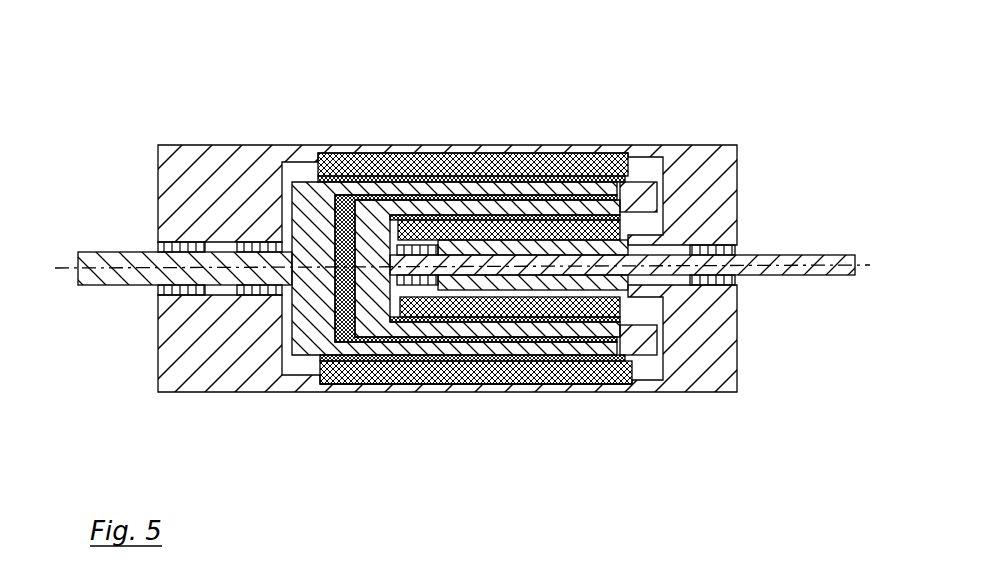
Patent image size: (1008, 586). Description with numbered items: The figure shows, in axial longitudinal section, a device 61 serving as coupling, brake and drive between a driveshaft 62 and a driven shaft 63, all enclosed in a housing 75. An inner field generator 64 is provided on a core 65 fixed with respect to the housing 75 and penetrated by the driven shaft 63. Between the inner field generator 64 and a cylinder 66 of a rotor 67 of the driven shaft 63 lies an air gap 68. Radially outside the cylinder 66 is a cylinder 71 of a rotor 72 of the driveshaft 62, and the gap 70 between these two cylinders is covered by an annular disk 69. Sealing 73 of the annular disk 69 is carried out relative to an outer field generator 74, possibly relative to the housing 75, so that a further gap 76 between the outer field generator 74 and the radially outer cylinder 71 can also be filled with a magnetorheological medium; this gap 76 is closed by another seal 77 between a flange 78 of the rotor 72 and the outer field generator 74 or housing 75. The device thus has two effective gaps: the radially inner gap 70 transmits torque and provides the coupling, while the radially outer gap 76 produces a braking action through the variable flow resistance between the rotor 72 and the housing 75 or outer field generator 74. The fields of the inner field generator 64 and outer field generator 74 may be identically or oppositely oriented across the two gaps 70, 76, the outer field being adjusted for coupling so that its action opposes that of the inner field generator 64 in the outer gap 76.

The device 61 is at (154, 128).
The driveshaft 62 is at (110, 255).
The driven shaft 63 is at (828, 258).
The inner field generator 64 is at (628, 303).
The core 65 is at (510, 216).
The cylinder of the rotor of the driven shaft 66 is at (578, 230).
The rotor of the driven shaft 67 is at (373, 188).
The air gap 68 is at (438, 170).
The annular disk 69 is at (645, 188).
The gap 70 is at (467, 330).
The cylinder of the rotor of the driveshaft 71 is at (535, 372).
The rotor of the driveshaft 72 is at (304, 366).
The sealing 73 is at (622, 178).
The outer field generator 74 is at (593, 383).
The housing 75 is at (250, 136).
The gap 76 is at (404, 363).
The seal 77 is at (320, 180).
The flange 78 is at (300, 320).